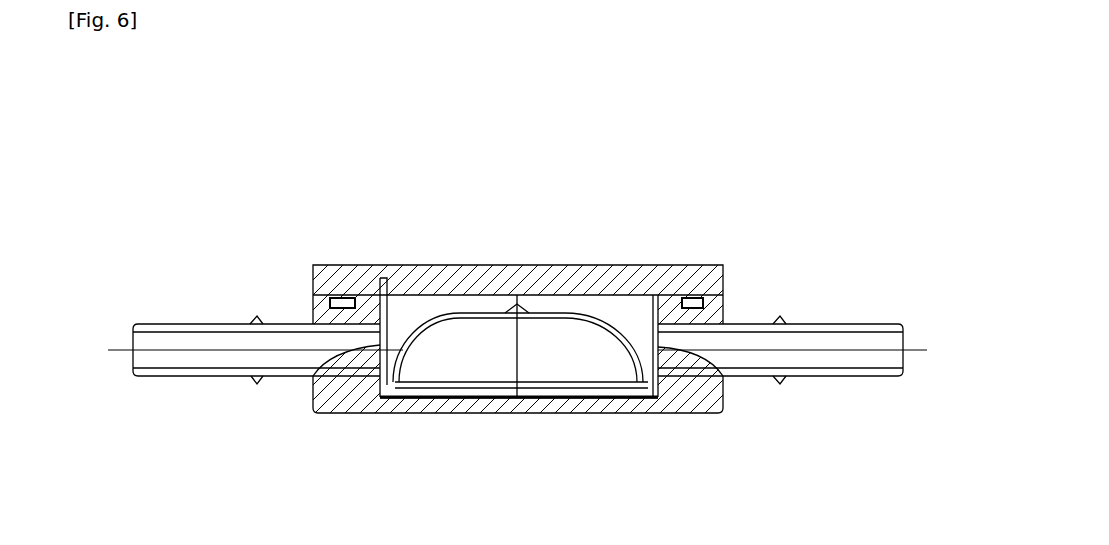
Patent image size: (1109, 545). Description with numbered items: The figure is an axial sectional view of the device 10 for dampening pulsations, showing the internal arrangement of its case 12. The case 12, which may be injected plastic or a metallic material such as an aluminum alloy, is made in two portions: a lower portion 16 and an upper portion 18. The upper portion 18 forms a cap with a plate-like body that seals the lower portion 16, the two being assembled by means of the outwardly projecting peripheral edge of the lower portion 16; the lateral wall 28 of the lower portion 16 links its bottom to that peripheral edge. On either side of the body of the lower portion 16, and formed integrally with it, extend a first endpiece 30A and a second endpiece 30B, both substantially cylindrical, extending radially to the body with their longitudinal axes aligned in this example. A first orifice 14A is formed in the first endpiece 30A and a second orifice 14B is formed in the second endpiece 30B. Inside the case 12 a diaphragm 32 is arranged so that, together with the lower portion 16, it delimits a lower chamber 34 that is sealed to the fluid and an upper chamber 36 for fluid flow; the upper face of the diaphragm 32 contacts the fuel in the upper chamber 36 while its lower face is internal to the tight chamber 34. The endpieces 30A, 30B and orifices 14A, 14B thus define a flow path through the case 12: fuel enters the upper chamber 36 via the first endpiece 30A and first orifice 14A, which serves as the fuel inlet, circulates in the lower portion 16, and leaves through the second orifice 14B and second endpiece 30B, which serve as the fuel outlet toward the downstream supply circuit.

The device 10 is at (319, 222).
The case 12 is at (648, 265).
The first orifice 14A is at (313, 376).
The second orifice 14B is at (723, 376).
The lower portion 16 is at (673, 397).
The upper portion 18 is at (656, 295).
The lateral wall 28 is at (313, 302).
The first endpiece 30A is at (177, 378).
The second endpiece 30B is at (825, 342).
The diaphragm 32 is at (470, 316).
The lower chamber 34 is at (508, 355).
The upper chamber 36 is at (610, 303).